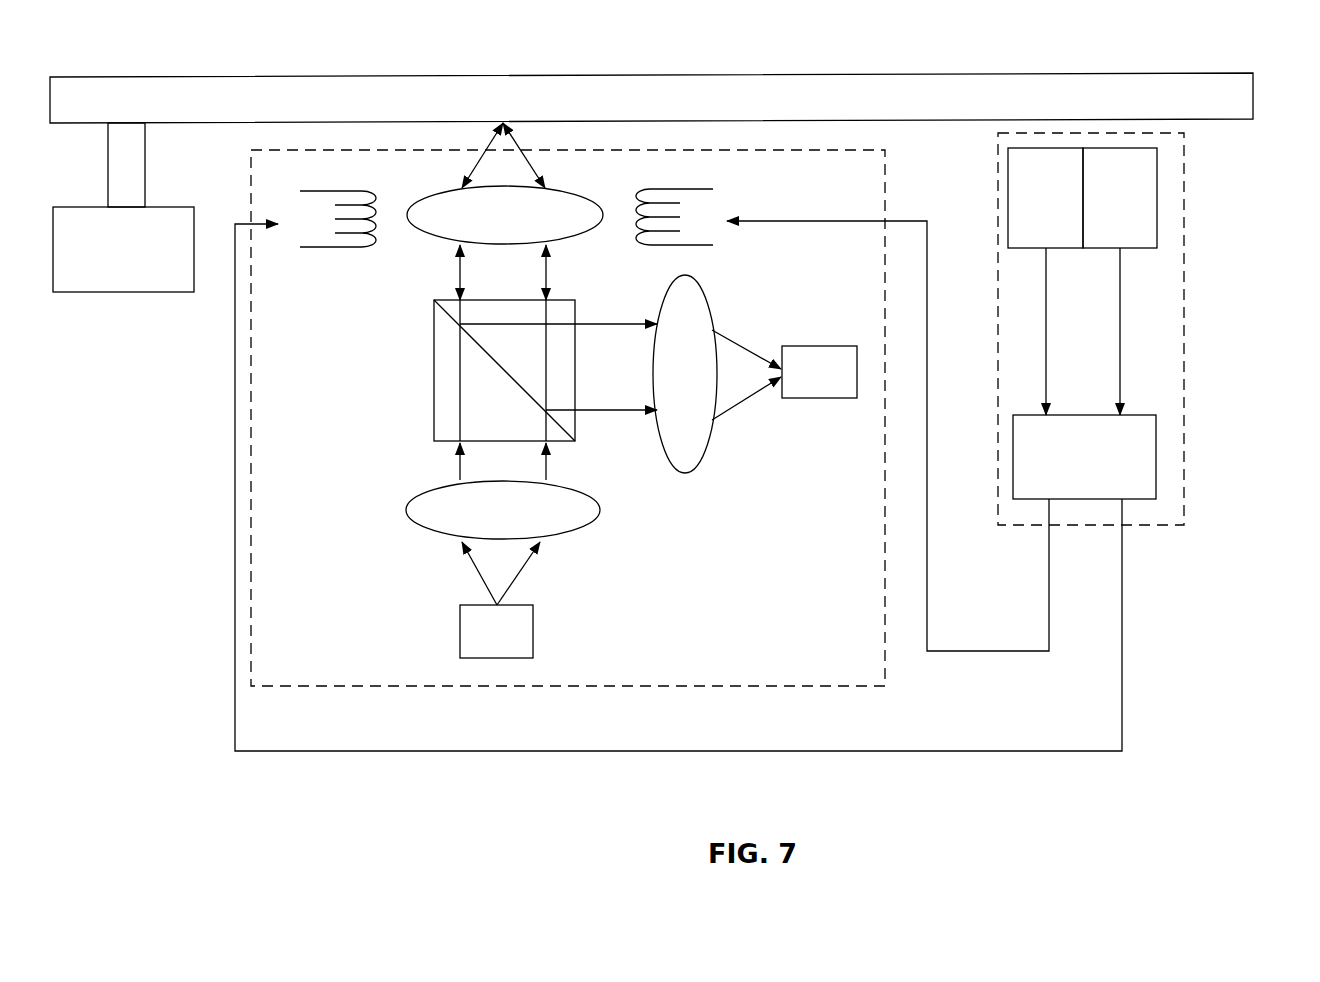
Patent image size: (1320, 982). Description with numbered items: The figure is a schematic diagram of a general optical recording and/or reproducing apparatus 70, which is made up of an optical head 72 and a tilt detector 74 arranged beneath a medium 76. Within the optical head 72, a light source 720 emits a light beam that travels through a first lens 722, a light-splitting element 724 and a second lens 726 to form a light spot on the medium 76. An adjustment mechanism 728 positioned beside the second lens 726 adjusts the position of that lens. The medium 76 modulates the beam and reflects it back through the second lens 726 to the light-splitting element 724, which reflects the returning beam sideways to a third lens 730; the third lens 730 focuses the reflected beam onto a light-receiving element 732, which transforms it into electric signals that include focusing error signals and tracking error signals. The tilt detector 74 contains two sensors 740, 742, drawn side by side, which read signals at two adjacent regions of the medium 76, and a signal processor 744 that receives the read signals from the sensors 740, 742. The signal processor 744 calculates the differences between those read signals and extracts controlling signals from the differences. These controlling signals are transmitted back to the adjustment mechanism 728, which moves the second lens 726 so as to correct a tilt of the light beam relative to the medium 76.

The optical recording and/or reproducing apparatus 70 is at (146, 417).
The optical head 72 is at (842, 656).
The tilt detector 74 is at (1162, 291).
The medium 76 is at (1211, 92).
The light source 720 is at (518, 628).
The first lens 722 is at (432, 497).
The light-splitting element 724 is at (445, 400).
The second lens 726 is at (452, 227).
The adjustment mechanism 728 is at (710, 238).
The third lens 730 is at (687, 448).
The light-receiving element 732 is at (813, 387).
The sensor 740 is at (1141, 187).
The sensor 742 is at (1023, 157).
The signal processor 744 is at (1143, 458).